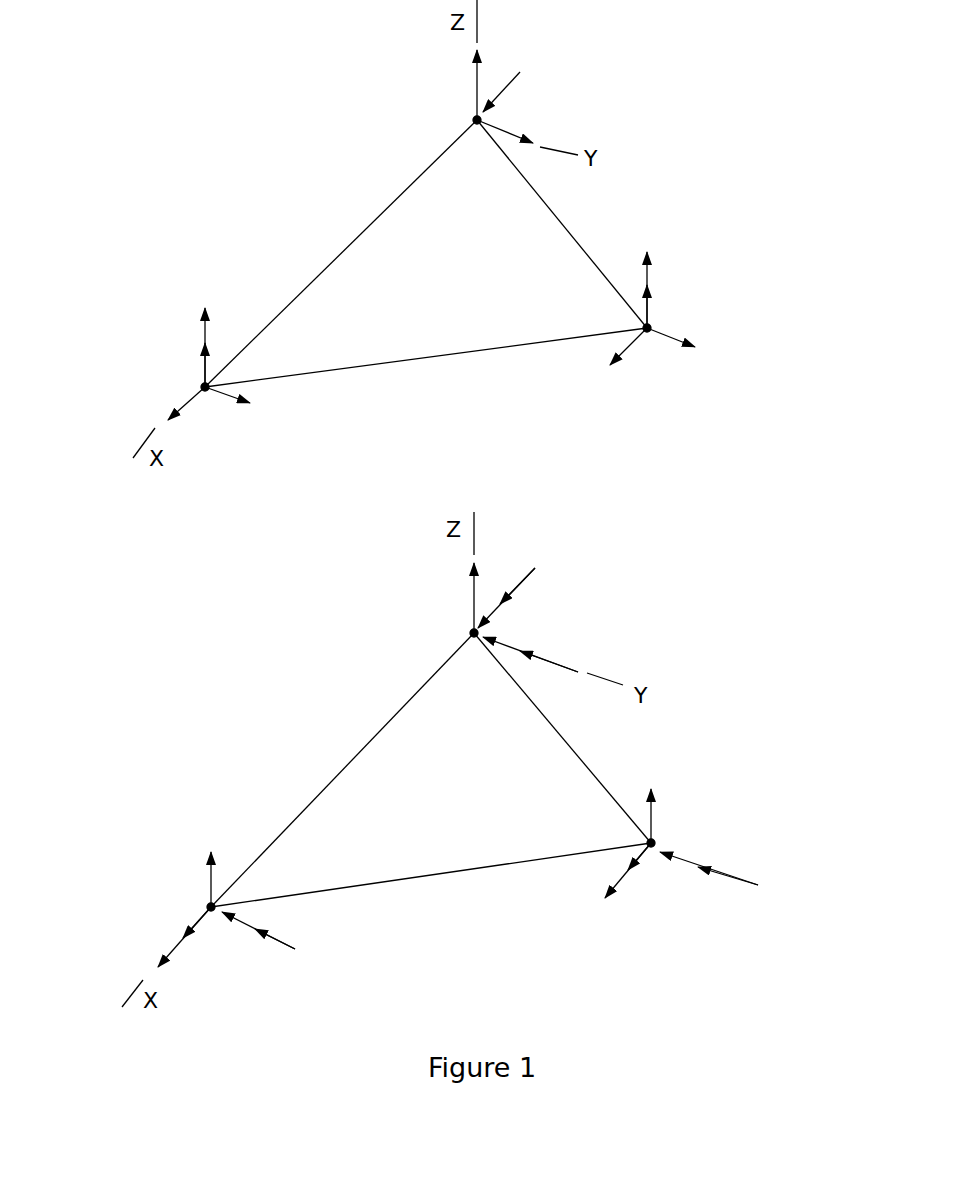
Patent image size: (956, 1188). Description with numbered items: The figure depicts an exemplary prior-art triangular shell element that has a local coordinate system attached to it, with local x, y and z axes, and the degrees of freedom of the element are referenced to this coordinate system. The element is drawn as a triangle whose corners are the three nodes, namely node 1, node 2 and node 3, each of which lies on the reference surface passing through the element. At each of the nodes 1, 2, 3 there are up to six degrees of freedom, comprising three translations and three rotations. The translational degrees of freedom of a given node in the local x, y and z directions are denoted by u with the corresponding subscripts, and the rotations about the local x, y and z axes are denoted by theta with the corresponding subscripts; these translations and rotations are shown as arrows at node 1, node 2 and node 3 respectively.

The node 1 is at (488, 378).
The node 2 is at (215, 644).
The node 3 is at (655, 580).